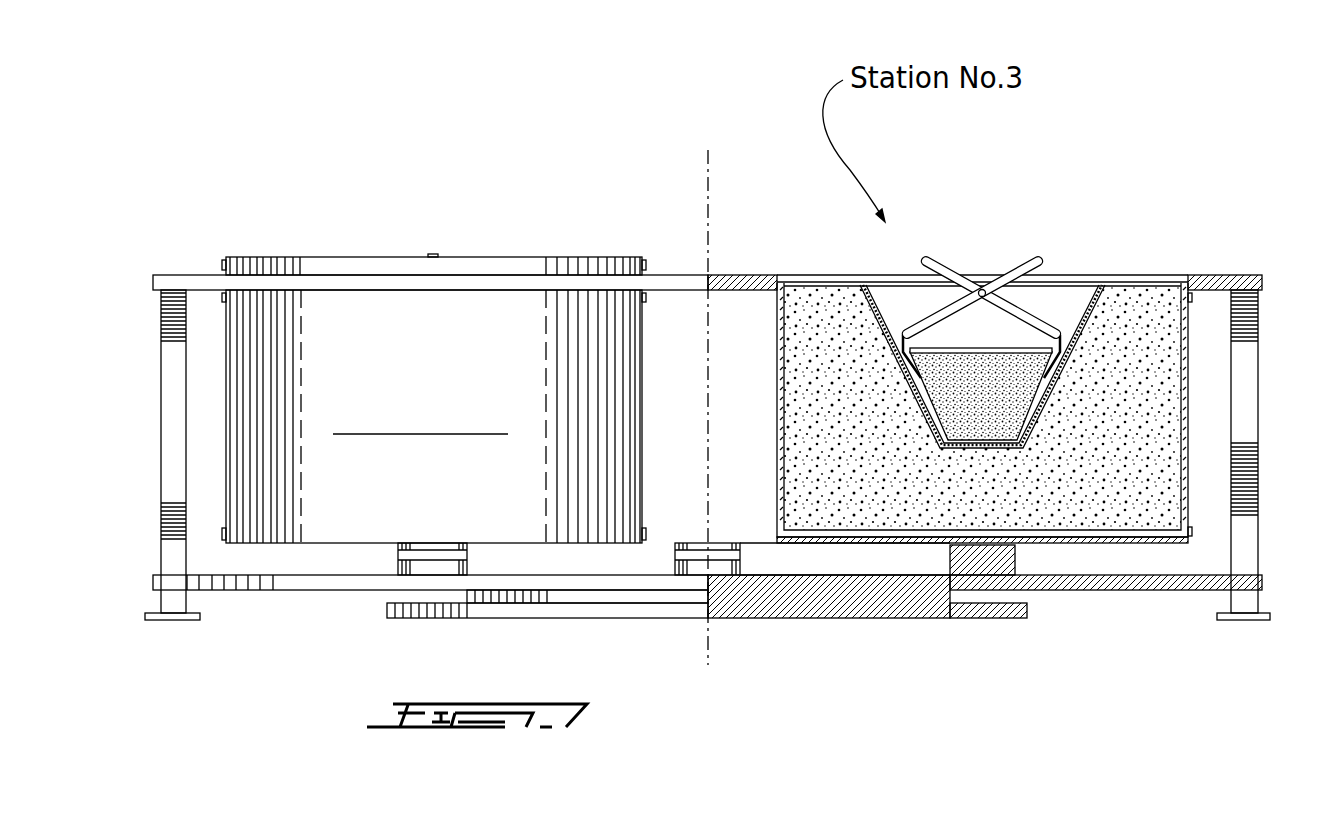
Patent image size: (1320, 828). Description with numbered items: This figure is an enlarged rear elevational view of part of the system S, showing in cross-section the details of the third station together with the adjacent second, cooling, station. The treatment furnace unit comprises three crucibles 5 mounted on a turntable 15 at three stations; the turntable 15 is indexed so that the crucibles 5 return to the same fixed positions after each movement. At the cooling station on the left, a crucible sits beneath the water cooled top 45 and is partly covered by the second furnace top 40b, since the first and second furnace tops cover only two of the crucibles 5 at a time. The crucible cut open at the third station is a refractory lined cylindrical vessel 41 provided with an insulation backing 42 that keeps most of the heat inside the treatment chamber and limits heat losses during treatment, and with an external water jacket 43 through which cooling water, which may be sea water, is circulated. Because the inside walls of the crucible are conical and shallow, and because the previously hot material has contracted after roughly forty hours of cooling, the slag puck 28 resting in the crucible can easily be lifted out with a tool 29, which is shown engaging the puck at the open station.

The system S is at (420, 165).
The crucibles 5 is at (292, 543).
The turntable 15 is at (1098, 592).
The slag puck 28 is at (980, 400).
The tool 29 is at (942, 262).
The second furnace top 40b is at (573, 257).
The refractory lined cylindrical vessel 41 is at (515, 510).
The insulation backing 42 is at (1157, 535).
The external water jacket 43 is at (778, 343).
The water cooled top 45 is at (278, 257).